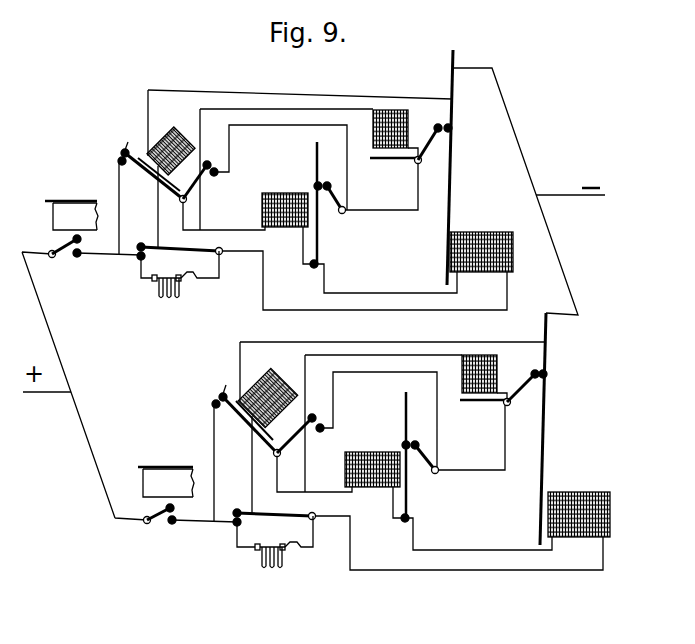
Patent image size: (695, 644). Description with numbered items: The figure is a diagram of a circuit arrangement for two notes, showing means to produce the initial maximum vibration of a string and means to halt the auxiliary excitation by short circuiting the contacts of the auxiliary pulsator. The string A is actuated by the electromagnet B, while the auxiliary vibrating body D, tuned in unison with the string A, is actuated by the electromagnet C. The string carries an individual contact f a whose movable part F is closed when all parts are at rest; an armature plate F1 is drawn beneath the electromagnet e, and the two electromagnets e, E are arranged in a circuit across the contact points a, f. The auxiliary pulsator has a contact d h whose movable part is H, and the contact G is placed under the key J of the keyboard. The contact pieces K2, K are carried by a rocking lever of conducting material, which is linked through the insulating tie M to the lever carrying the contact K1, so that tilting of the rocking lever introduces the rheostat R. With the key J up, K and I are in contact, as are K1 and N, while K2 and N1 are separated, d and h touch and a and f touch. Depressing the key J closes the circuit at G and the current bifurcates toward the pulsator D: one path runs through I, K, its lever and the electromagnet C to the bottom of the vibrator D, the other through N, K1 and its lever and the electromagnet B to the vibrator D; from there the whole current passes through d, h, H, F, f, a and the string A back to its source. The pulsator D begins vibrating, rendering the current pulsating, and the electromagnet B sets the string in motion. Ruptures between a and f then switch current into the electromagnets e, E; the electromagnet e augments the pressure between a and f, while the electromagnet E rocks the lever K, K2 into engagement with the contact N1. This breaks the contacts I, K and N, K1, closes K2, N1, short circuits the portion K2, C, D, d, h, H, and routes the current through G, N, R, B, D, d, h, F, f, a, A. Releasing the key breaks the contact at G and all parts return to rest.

The string A is at (448, 183).
The electromagnet B is at (480, 233).
The electromagnet C is at (268, 193).
The auxiliary vibrating body D is at (315, 145).
The contact d is at (315, 185).
The contact h is at (327, 182).
The movable part of contact d h H is at (333, 212).
The electromagnet e is at (426, 251).
The armature plate F1 is at (391, 162).
The movable part of contact f a F is at (430, 140).
The contact point f is at (436, 127).
The contact point a is at (453, 128).
The electromagnet E is at (164, 137).
The contact piece K is at (172, 263).
The contact I is at (118, 160).
The contact piece K2 is at (207, 160).
The contact N1 is at (320, 440).
The insulating tie M is at (155, 198).
The key J is at (63, 207).
The contact G is at (62, 247).
The contact K1 is at (141, 245).
The contact N is at (139, 258).
The rheostat R is at (227, 422).